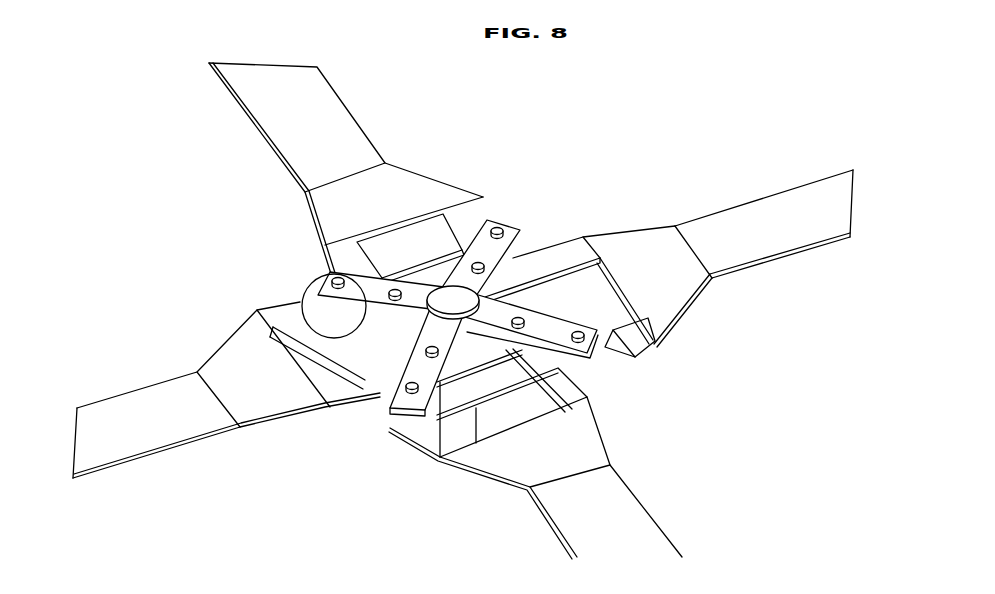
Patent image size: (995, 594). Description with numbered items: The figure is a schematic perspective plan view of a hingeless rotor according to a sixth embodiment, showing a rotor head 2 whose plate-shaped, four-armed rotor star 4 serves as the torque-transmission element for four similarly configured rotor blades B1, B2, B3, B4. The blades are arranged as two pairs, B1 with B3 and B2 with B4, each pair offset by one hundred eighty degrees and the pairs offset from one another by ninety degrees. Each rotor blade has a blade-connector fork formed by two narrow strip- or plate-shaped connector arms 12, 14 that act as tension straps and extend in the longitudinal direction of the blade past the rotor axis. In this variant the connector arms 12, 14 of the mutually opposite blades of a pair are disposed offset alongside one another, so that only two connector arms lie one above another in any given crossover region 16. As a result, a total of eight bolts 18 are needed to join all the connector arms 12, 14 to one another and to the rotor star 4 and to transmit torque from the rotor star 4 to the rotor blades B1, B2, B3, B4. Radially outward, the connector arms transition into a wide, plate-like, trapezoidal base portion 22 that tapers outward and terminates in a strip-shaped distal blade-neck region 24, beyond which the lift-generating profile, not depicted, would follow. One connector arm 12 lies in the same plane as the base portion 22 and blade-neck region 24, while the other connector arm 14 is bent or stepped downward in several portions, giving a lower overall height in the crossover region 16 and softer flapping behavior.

The rotor head 2 is at (606, 126).
The rotor star 4 is at (513, 228).
The connector arm 12 is at (350, 252).
The connector arm 14 is at (470, 233).
The crossover region 16 is at (307, 305).
The bolt 18 is at (497, 229).
The base portion 22 is at (668, 237).
The blade-neck region 24 is at (760, 215).
The rotor blade B1 is at (838, 241).
The rotor blade B2 is at (683, 557).
The rotor blade B3 is at (92, 413).
The rotor blade B4 is at (209, 68).